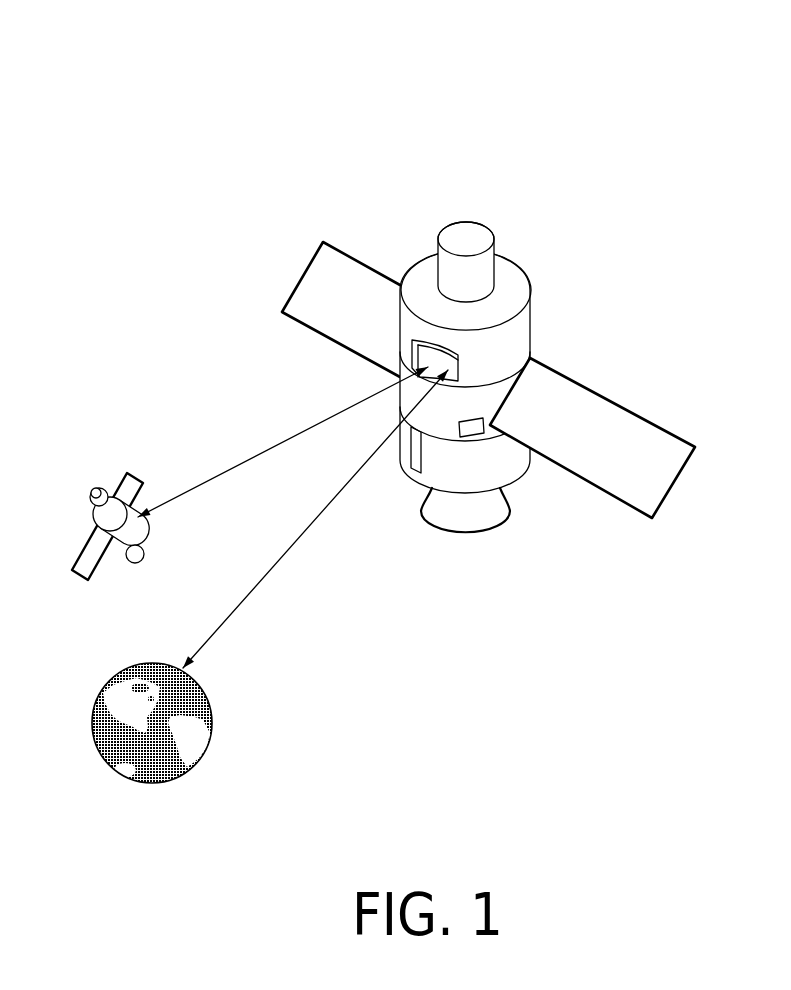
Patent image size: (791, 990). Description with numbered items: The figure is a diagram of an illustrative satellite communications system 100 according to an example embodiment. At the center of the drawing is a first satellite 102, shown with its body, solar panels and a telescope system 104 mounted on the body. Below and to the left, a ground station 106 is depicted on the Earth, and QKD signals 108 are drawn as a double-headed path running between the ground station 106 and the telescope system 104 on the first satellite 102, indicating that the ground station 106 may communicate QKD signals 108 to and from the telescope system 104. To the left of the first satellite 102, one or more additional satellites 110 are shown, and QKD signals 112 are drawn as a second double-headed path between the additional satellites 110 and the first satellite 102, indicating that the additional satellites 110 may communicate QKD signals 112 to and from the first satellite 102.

The satellite communications system 100 is at (350, 84).
The first satellite 102 is at (532, 505).
The telescope system 104 is at (470, 357).
The ground station 106 is at (103, 683).
The QKD signals 108 is at (288, 551).
The additional satellites 110 is at (128, 472).
The QKD signals 112 is at (290, 437).